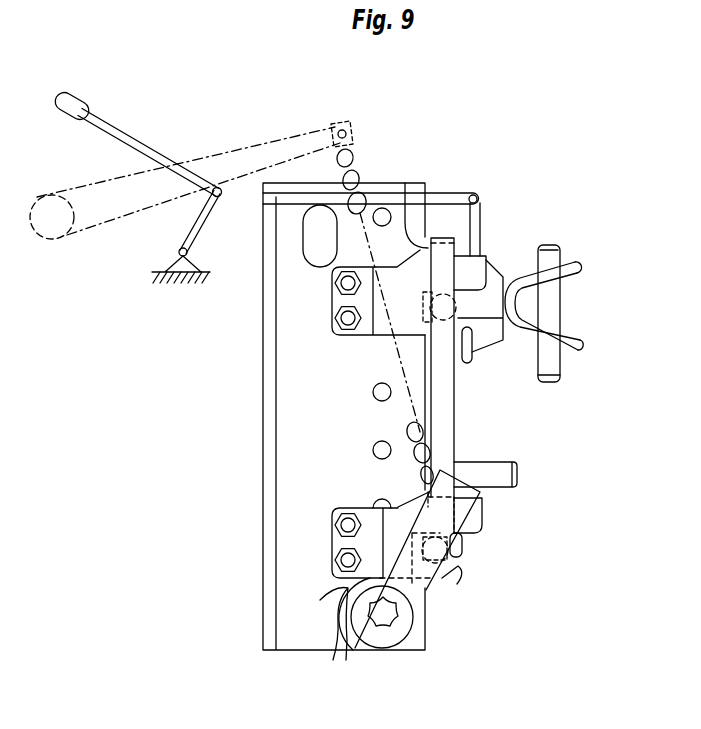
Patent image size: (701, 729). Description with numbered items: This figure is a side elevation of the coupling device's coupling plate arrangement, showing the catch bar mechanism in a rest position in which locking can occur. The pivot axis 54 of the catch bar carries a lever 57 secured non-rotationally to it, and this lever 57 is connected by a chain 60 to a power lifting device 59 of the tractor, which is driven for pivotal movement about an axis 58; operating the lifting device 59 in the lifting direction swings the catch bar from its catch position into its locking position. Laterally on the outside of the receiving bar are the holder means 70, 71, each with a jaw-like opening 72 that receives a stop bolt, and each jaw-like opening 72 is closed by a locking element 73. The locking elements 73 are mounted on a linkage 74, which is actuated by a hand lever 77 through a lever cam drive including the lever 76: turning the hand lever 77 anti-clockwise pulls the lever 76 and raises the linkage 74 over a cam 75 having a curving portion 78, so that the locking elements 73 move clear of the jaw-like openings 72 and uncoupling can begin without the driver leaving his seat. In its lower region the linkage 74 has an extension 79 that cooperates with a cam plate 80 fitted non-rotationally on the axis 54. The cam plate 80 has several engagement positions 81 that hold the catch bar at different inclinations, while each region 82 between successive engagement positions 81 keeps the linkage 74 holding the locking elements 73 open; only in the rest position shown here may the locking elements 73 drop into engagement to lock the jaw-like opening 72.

The pivot axis 54 is at (392, 620).
The lever 57 is at (427, 590).
The axis 58 is at (43, 233).
The power lifting device 59 is at (211, 157).
The chain 60 is at (352, 163).
The holder means 70 is at (478, 518).
The holder means 71 is at (479, 268).
The jaw-like opening 72 is at (519, 320).
The locking element 73 is at (458, 303).
The linkage 74 is at (455, 415).
The cam 75 is at (466, 247).
The lever 76 is at (453, 193).
The hand lever 77 is at (107, 122).
The curving portion 78 is at (406, 183).
The extension 79 is at (394, 518).
The cam plate 80 is at (366, 648).
The engagement positions 81 is at (350, 590).
The region 82 is at (341, 617).